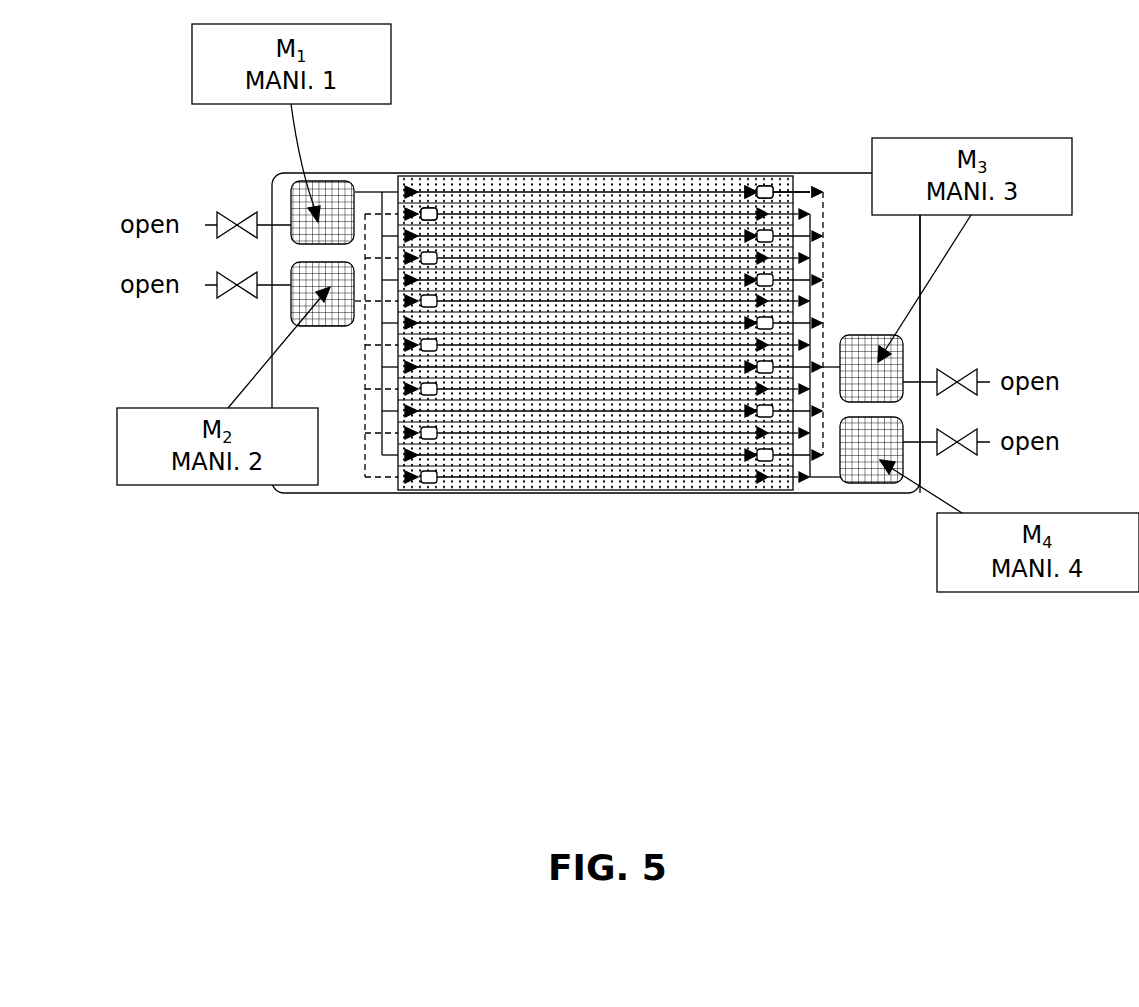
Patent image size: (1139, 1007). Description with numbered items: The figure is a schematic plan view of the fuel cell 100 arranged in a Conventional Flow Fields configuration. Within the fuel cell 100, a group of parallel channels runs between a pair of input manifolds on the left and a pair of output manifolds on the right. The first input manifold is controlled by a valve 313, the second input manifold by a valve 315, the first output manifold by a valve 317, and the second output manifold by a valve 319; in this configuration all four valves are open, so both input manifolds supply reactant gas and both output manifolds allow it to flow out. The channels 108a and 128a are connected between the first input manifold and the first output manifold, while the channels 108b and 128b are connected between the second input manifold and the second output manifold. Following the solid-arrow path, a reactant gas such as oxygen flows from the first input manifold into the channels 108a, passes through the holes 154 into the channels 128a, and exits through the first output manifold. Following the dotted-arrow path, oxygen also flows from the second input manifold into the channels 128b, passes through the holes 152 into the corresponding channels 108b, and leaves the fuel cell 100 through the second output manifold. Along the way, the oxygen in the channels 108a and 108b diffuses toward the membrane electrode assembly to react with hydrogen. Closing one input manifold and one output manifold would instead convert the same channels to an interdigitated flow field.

The fuel cell 100 is at (597, 269).
The holes 152 is at (428, 183).
The channels 108a is at (436, 206).
The channels 128b is at (517, 213).
The holes 154 is at (757, 190).
The channels 108b is at (780, 194).
The channels 128a is at (797, 190).
The valve 313 is at (237, 222).
The valve 315 is at (237, 288).
The valve 317 is at (957, 380).
The valve 319 is at (957, 445).